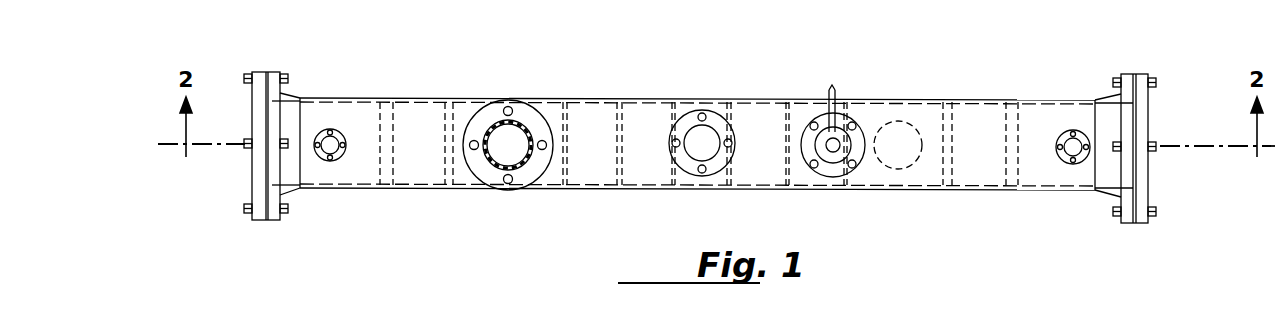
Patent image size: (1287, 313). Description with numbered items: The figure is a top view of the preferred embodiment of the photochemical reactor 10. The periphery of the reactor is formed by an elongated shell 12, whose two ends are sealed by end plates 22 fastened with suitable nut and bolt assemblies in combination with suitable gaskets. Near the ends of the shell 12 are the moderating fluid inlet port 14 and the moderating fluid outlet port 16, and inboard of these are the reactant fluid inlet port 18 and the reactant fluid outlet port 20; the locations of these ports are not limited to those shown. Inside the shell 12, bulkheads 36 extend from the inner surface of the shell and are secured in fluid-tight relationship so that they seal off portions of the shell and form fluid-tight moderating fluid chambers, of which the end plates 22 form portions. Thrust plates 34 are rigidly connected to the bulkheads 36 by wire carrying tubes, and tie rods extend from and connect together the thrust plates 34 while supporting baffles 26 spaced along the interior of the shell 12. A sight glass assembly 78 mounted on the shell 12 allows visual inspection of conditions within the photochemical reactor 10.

The photochemical reactor 10 is at (918, 78).
The shell 12 is at (985, 100).
The moderating fluid inlet port 14 is at (337, 150).
The moderating fluid outlet port 16 is at (1066, 133).
The reactant fluid inlet port 18 is at (503, 168).
The reactant fluid outlet port 20 is at (908, 170).
The end plates 22 is at (258, 181).
The baffles 26 is at (565, 122).
The thrust plates 34 is at (453, 100).
The bulkheads 36 is at (393, 118).
The sight glass assembly 78 is at (821, 117).